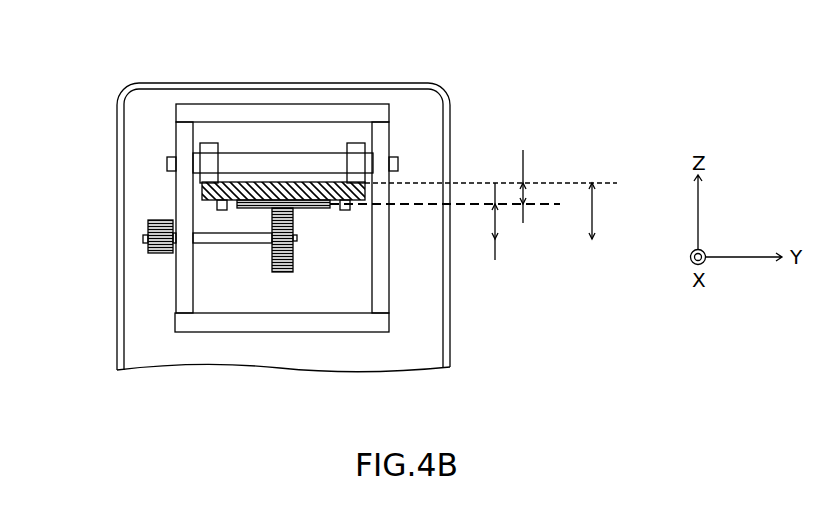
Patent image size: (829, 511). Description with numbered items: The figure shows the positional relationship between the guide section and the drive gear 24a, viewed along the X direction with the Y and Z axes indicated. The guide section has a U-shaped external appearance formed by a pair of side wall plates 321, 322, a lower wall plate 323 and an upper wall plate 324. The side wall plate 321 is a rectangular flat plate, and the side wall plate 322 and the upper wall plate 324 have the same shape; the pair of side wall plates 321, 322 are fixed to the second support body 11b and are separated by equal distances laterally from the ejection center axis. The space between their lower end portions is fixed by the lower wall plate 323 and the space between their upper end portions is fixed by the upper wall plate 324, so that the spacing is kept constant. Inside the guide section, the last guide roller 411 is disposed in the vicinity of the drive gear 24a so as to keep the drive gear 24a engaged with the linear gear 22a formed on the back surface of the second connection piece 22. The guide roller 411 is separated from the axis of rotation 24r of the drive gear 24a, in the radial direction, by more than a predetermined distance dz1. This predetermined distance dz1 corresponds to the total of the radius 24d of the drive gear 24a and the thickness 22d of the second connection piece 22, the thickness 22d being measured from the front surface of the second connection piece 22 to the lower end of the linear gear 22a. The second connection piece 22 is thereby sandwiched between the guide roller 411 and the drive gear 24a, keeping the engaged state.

The second support body 11b is at (117, 110).
The side wall plate 321 is at (176, 147).
The side wall plate 322 is at (389, 293).
The lower wall plate 323 is at (250, 332).
The upper wall plate 324 is at (377, 104).
The guide roller 411 is at (257, 153).
The second connection piece 22 is at (203, 196).
The linear gear 22a is at (317, 208).
The drive gear 24a is at (272, 268).
The axis of rotation 24r is at (617, 239).
The thickness 22d is at (540, 186).
The radius 24d is at (511, 229).
The predetermined distance dz1 is at (609, 211).